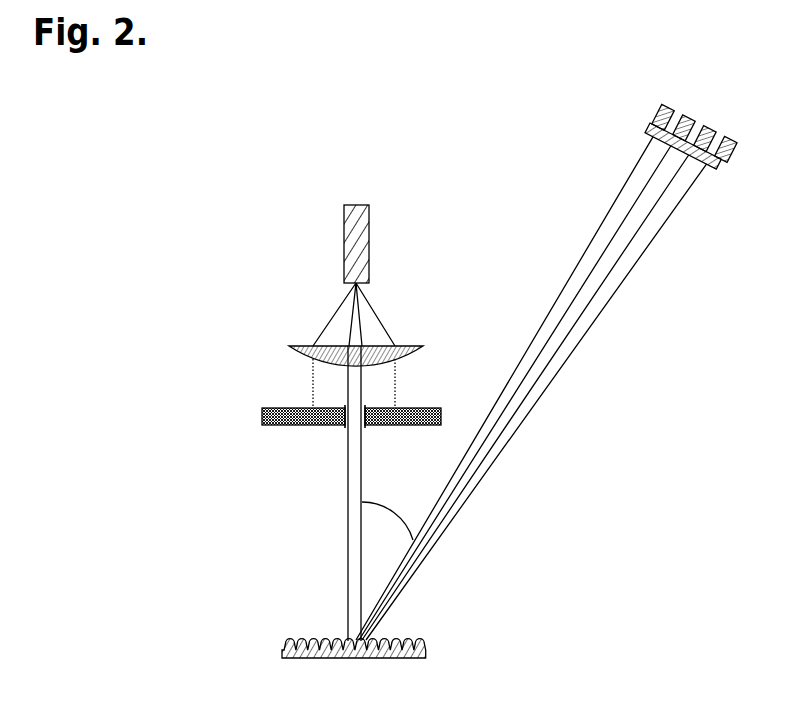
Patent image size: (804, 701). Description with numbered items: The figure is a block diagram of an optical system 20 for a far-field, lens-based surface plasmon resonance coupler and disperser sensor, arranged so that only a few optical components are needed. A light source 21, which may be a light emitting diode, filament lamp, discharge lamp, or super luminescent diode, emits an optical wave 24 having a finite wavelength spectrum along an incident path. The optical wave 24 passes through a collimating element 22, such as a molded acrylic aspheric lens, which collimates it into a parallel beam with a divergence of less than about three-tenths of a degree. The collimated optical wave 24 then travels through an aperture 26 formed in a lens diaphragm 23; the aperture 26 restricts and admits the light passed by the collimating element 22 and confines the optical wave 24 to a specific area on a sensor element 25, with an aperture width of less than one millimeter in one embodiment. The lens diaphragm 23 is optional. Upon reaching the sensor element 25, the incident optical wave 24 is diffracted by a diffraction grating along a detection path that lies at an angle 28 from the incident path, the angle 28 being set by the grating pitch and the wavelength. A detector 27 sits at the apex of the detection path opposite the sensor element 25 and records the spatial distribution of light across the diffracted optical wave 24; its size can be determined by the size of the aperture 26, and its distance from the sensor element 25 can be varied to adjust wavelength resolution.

The optical system 20 is at (152, 98).
The light source 21 is at (344, 235).
The collimating element 22 is at (288, 350).
The lens diaphragm 23 is at (258, 416).
The optical wave 24 is at (346, 547).
The sensor element 25 is at (281, 649).
The aperture 26 is at (343, 436).
The detector 27 is at (654, 117).
The angle 28 is at (420, 494).